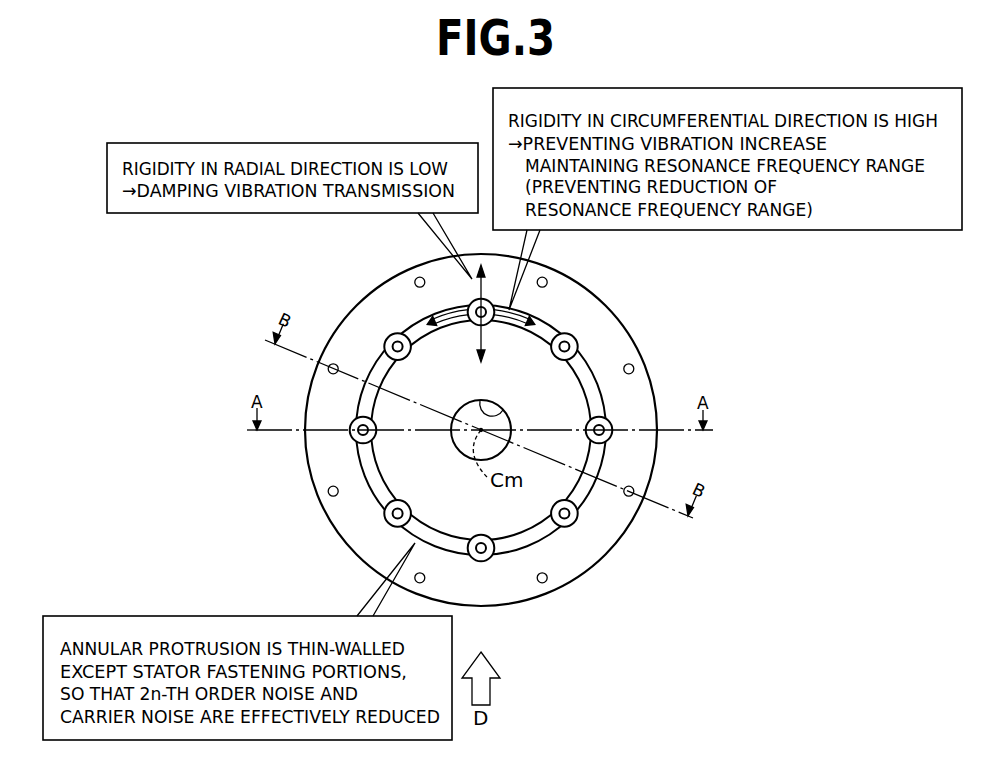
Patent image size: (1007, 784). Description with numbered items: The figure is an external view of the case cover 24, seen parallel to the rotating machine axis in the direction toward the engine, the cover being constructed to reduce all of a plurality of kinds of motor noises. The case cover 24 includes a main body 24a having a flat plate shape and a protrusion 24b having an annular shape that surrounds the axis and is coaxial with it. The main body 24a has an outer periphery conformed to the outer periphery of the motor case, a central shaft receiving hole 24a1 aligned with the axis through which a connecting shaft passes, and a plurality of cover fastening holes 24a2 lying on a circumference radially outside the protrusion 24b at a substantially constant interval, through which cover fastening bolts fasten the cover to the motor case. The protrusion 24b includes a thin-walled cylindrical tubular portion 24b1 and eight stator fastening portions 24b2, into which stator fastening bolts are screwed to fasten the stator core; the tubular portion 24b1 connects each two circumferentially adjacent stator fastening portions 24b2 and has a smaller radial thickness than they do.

The case cover 24 is at (489, 421).
The main body 24a is at (514, 431).
The shaft receiving hole 24a1 is at (505, 413).
The cover fastening holes 24a2 is at (638, 377).
The protrusion 24b is at (430, 442).
The thin-walled cylindrical tubular portion 24b1 is at (367, 463).
The stator fastening portions 24b2 is at (393, 525).